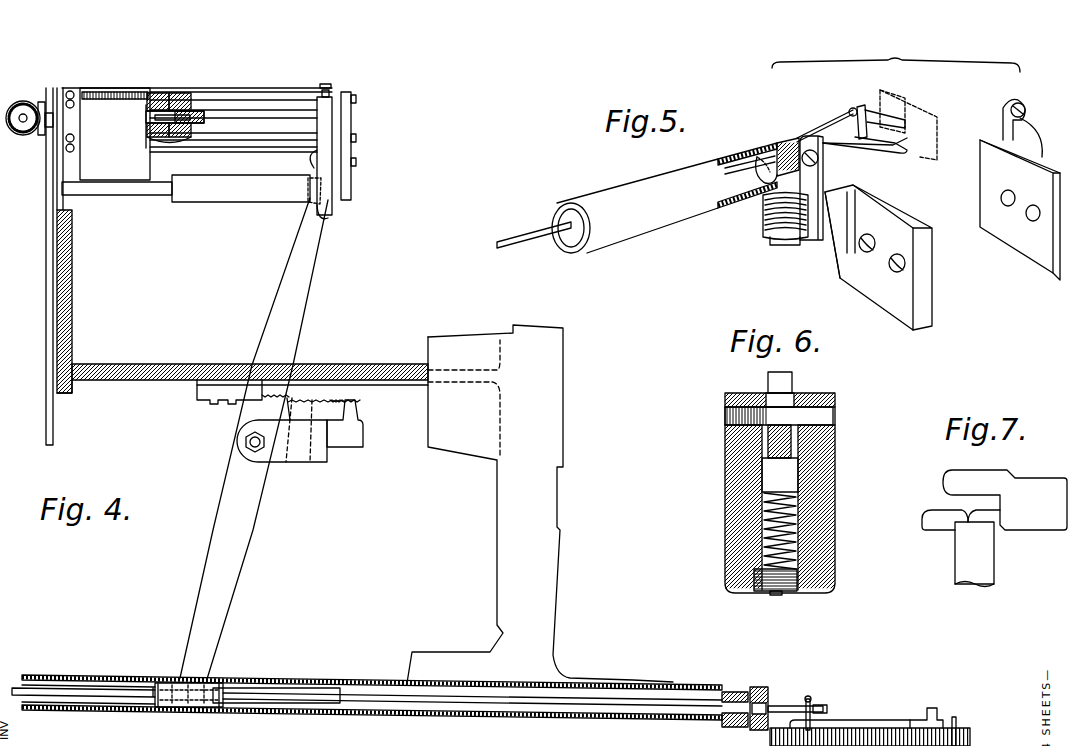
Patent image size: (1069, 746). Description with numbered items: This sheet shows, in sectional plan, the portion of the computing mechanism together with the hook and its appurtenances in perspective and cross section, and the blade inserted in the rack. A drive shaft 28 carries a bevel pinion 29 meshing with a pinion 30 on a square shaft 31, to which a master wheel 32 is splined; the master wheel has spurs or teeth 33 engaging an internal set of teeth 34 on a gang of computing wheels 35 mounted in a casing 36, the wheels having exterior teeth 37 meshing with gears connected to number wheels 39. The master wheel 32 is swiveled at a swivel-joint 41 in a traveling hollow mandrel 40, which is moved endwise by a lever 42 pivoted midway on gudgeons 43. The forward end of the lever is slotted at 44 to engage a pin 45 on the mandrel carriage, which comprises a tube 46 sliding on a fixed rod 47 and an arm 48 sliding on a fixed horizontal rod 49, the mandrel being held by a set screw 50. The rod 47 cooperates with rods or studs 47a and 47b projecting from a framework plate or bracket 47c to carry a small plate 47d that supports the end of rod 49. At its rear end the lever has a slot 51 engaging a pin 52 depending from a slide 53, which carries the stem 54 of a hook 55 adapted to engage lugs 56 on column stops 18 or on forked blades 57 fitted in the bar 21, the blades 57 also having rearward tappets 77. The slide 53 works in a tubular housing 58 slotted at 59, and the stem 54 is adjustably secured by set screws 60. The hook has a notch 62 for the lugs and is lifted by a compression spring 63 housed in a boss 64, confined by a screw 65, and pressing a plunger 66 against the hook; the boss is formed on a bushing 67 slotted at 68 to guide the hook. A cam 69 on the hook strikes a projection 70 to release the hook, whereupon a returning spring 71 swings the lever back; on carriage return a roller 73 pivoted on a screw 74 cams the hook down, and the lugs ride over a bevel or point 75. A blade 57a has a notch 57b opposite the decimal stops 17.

In FIG. 7, the decimal stop 17 is at (974, 554).
In FIG. 4, the column stop 18 is at (818, 721).
In FIG. 7, the column stop 18 is at (1003, 532).
In FIG. 4, the bar 21 is at (896, 728).
In FIG. 4, the drive shaft 28 is at (38, 126).
In FIG. 4, the bevel pinion 29 is at (23, 104).
In FIG. 4, the pinion 30 is at (47, 128).
In FIG. 4, the square shaft 31 is at (146, 120).
In FIG. 4, the master wheel 32 is at (205, 112).
In FIG. 4, the spurs or teeth 33 is at (175, 140).
In FIG. 4, the internal set of teeth 34 is at (150, 133).
In FIG. 4, the computing wheel 35 is at (152, 93).
In FIG. 4, the casing 36 is at (112, 92).
In FIG. 4, the exterior teeth 37 is at (175, 93).
In FIG. 4, the number wheel 39 is at (131, 92).
In FIG. 4, the mandrel 40 is at (276, 112).
In FIG. 4, the swivel-joint 41 is at (192, 113).
In FIG. 4, the lever 42 is at (254, 438).
In FIG. 4, the gudgeons 43 is at (245, 443).
In FIG. 4, the slot 44 is at (328, 212).
In FIG. 4, the pin 45 is at (306, 200).
In FIG. 4, the tube 46 is at (213, 190).
In FIG. 4, the fixed rod 47 is at (118, 186).
In FIG. 4, the rod or stud 47a is at (346, 146).
In FIG. 4, the rod or stud 47b is at (262, 92).
In FIG. 4, the framework plate or bracket 47c is at (46, 298).
In FIG. 4, the small plate 47d is at (351, 112).
In FIG. 4, the arm 48 is at (330, 128).
In FIG. 4, the fixed horizontal rod 49 is at (333, 170).
In FIG. 4, the set screw 50 is at (327, 90).
In FIG. 4, the slot 51 is at (184, 684).
In FIG. 4, the pin 52 is at (188, 706).
In FIG. 4, the slide 53 is at (222, 686).
In FIG. 4, the stem 54 is at (355, 694).
In FIG. 5, the stem 54 is at (543, 240).
In FIG. 6, the stem 54 is at (768, 437).
In FIG. 4, the hook 55 is at (815, 703).
In FIG. 5, the hook 55 is at (861, 128).
In FIG. 6, the hook 55 is at (768, 382).
In FIG. 5, the lug 56 is at (822, 124).
In FIG. 7, the lug 56 is at (928, 532).
In FIG. 5, the blade 57 is at (935, 120).
In FIG. 7, the blade 57a is at (1005, 500).
In FIG. 7, the notch 57b is at (950, 498).
In FIG. 4, the tubular guide or housing 58 is at (94, 676).
In FIG. 5, the tubular guide or housing 58 is at (616, 232).
In FIG. 4, the slot 59 is at (288, 690).
In FIG. 4, the set screw 60 is at (158, 707).
In FIG. 4, the notch 62 is at (807, 703).
In FIG. 5, the notch 62 is at (849, 110).
In FIG. 5, the compression spring 63 is at (765, 222).
In FIG. 6, the compression spring 63 is at (764, 530).
In FIG. 5, the boss 64 is at (814, 240).
In FIG. 6, the boss 64 is at (832, 485).
In FIG. 5, the screw 65 is at (781, 245).
In FIG. 6, the screw 65 is at (772, 580).
In FIG. 6, the plunger 66 is at (780, 475).
In FIG. 4, the bushing 67 is at (732, 692).
In FIG. 5, the bushing 67 is at (745, 165).
In FIG. 4, the vertical slot 68 is at (742, 692).
In FIG. 5, the vertical slot 68 is at (781, 150).
In FIG. 5, the cam 69 is at (891, 151).
In FIG. 4, the projection 70 is at (933, 708).
In FIG. 5, the projection 70 is at (1007, 102).
In FIG. 4, the returning spring 71 is at (345, 423).
In FIG. 4, the stud or roller 73 is at (732, 727).
In FIG. 6, the stud or roller 73 is at (785, 400).
In FIG. 4, the screw 74 is at (759, 688).
In FIG. 5, the screw 74 is at (818, 160).
In FIG. 6, the screw 74 is at (833, 416).
In FIG. 4, the bevel or point 75 is at (826, 705).
In FIG. 5, the bevel or point 75 is at (880, 105).
In FIG. 5, the tappet 77 is at (937, 140).